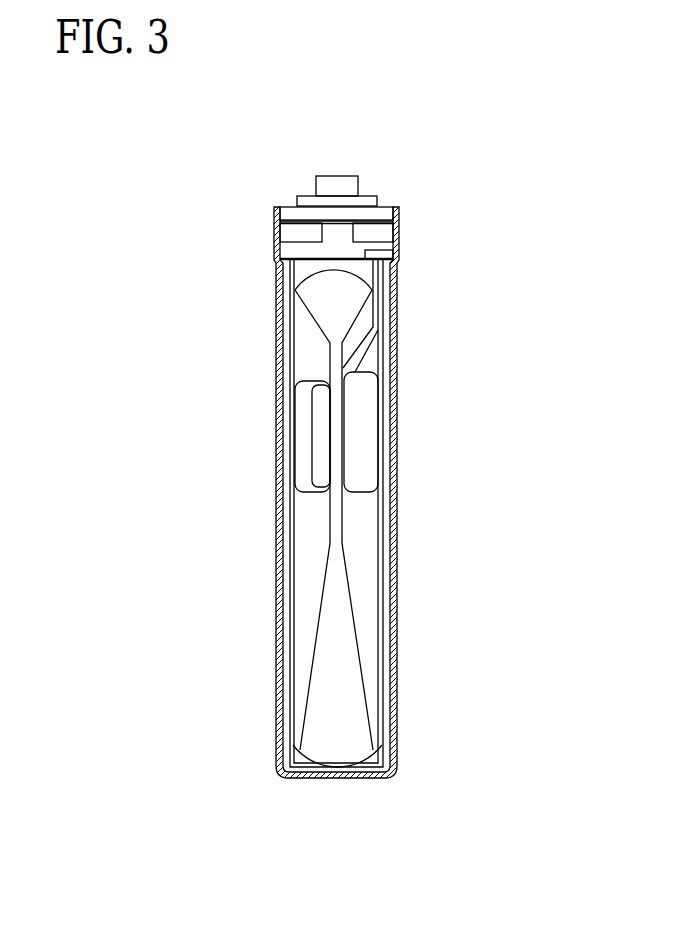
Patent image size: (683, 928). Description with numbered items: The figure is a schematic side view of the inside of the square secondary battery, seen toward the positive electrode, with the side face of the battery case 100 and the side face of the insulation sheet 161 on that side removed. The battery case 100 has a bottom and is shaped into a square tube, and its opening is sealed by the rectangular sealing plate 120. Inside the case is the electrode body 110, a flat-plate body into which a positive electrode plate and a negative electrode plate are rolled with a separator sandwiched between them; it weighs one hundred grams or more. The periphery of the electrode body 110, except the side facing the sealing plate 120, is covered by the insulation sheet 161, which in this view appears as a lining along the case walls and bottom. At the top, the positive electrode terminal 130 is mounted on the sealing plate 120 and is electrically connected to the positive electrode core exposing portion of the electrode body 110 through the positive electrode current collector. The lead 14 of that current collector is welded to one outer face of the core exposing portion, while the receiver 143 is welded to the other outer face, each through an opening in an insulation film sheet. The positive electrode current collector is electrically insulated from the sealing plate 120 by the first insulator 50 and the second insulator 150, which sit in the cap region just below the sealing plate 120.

The battery case 100 is at (278, 697).
The electrode body 110 is at (312, 523).
The sealing plate 120 is at (386, 206).
The positive electrode terminal 130 is at (337, 186).
The second insulator 150 is at (383, 231).
The first insulator 50 is at (375, 248).
The lead 14 is at (365, 345).
The receiver 143 is at (312, 437).
The insulation sheet 161 is at (293, 577).